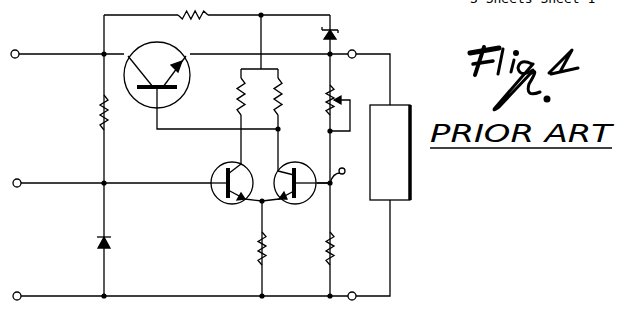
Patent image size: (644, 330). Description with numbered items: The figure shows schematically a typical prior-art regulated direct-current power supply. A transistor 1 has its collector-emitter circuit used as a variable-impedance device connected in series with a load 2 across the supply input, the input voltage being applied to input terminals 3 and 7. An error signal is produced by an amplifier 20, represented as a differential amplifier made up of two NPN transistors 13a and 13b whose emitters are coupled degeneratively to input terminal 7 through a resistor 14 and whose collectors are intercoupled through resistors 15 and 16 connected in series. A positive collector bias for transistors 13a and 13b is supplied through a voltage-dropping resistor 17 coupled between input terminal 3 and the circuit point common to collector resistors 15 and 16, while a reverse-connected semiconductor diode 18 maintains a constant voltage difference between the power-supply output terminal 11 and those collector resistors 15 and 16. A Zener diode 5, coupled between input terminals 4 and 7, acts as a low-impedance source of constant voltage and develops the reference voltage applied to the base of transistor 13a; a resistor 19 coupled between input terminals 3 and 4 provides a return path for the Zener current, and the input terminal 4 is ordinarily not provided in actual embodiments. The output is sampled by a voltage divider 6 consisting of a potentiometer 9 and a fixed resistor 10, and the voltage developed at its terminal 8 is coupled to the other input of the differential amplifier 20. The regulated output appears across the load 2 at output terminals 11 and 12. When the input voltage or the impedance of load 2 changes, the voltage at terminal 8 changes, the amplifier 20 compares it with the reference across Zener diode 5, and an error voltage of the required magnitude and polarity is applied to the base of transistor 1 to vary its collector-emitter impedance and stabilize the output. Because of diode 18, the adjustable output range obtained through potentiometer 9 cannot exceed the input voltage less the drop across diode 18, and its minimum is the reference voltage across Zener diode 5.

The transistor 1 is at (190, 79).
The load 2 is at (410, 105).
The input terminal 3 is at (16, 58).
The input terminal 4 is at (19, 179).
The Zener diode 5 is at (111, 236).
The voltage divider 6 is at (354, 199).
The input terminal 7 is at (19, 292).
The terminal 8 is at (342, 169).
The potentiometer 9 is at (338, 85).
The fixed resistor 10 is at (335, 245).
The power-supply output terminal 11 is at (354, 50).
The output terminal 12 is at (352, 300).
The NPN transistor 13a is at (222, 201).
The NPN transistor 13b is at (286, 203).
The resistor 14 is at (258, 247).
The collector resistor 15 is at (239, 100).
The collector resistor 16 is at (279, 107).
The voltage-dropping resistor 17 is at (184, 17).
The reverse-connected semiconductor diode 18 is at (334, 26).
The resistor 19 is at (103, 111).
The amplifier 20 is at (266, 164).